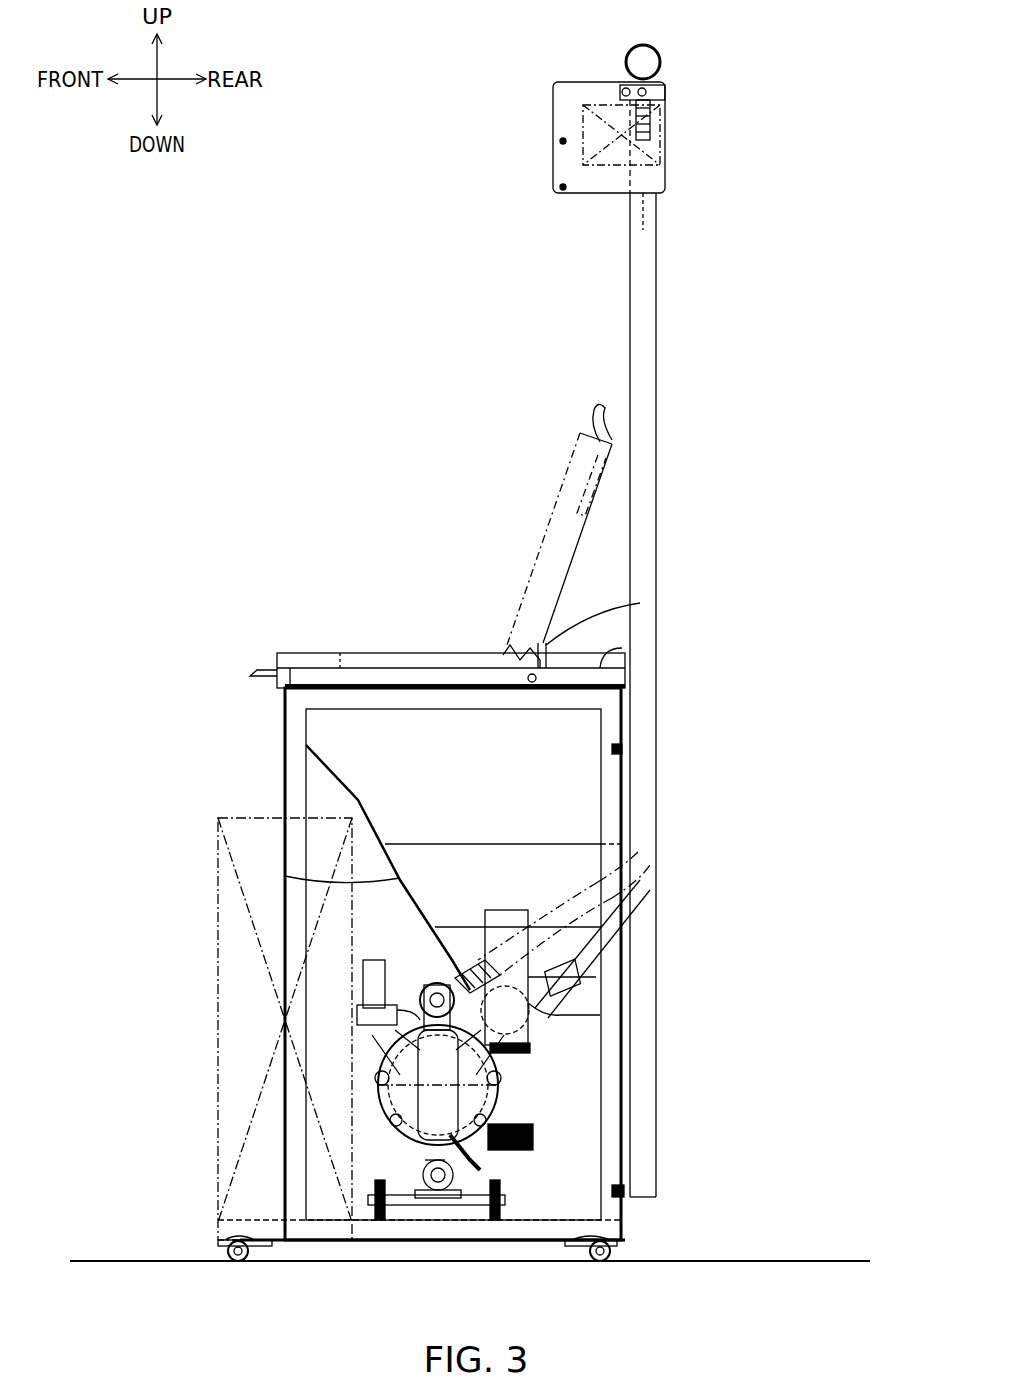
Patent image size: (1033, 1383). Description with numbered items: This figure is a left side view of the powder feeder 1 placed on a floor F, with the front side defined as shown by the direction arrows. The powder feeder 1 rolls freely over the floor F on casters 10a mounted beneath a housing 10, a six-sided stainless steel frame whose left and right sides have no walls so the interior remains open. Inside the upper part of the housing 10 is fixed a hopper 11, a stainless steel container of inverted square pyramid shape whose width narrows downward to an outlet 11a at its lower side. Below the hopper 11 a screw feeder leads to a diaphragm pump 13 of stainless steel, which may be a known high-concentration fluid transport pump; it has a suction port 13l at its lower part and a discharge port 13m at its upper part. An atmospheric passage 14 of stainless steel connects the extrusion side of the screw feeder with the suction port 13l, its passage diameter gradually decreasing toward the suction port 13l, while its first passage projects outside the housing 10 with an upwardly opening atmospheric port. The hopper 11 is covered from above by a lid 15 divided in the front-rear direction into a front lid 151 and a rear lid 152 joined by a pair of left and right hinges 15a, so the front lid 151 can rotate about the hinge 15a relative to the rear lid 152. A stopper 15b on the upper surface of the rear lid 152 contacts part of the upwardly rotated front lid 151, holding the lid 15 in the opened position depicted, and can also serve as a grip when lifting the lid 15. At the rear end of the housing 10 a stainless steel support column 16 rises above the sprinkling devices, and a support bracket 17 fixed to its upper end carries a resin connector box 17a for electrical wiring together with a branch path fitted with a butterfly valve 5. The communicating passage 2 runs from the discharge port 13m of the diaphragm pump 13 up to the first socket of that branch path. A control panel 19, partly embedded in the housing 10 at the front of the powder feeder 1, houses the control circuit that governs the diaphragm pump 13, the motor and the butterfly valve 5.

The powder feeder 1 is at (258, 525).
The communicating passage 2 is at (618, 900).
The butterfly valve 5 is at (663, 60).
The housing 10 is at (288, 776).
The caster 10a is at (235, 1262).
The hopper 11 is at (400, 880).
The outlet 11a is at (560, 1015).
The diaphragm pump 13 is at (522, 1105).
The discharge port 13m is at (440, 975).
The suction port 13l is at (476, 1200).
The atmospheric passage 14 is at (583, 975).
The lid 15 is at (376, 653).
The hinge 15a is at (505, 650).
The stopper 15b is at (640, 603).
The support column 16 is at (658, 345).
The support bracket 17 is at (553, 128).
The connector box 17a is at (598, 105).
The control panel 19 is at (218, 975).
The front lid 151 is at (545, 520).
The rear lid 152 is at (622, 648).
The floor F is at (737, 1261).